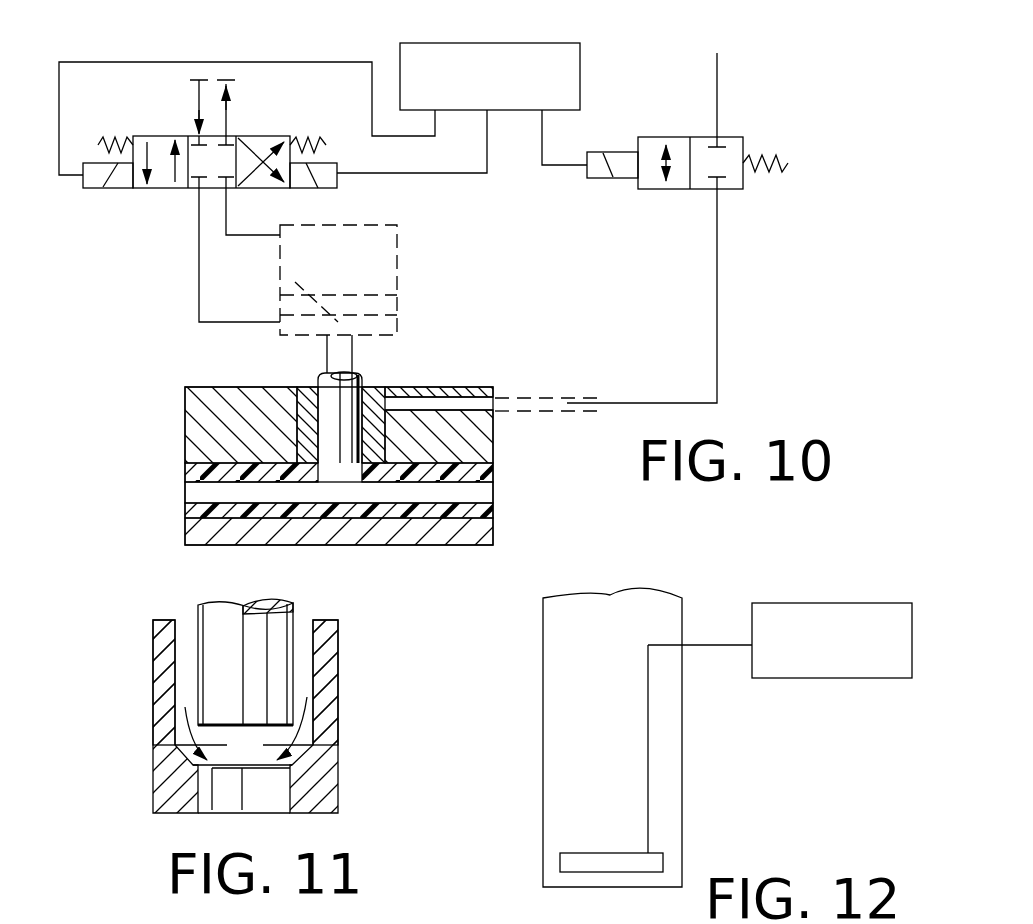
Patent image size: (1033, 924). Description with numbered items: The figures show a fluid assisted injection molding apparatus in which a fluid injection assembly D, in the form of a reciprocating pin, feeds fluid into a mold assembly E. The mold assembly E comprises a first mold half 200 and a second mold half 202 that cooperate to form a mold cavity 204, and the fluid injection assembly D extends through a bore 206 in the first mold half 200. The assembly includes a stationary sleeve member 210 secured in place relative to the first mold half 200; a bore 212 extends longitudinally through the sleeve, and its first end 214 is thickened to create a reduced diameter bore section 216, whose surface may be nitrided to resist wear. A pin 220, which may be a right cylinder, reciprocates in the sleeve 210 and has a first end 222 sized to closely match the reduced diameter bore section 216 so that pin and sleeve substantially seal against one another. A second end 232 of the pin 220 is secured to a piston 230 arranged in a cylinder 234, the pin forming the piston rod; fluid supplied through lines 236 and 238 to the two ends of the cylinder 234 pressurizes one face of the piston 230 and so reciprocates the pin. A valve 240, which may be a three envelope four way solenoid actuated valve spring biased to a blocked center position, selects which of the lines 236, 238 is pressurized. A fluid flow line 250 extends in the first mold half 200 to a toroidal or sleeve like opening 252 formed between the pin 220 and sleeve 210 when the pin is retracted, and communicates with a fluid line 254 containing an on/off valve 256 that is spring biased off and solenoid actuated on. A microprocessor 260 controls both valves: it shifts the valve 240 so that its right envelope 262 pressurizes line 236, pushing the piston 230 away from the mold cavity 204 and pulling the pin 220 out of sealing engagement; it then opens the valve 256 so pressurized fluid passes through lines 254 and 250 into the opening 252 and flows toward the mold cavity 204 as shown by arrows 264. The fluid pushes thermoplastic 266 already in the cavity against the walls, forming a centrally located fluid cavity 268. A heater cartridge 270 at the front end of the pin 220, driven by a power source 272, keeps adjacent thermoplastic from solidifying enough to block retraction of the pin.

In FIG. 10, the first mold half 200 is at (472, 450).
In FIG. 10, the second mold half 202 is at (483, 528).
In FIG. 10, the mold cavity 204 is at (393, 508).
In FIG. 10, the bore 206 is at (300, 430).
In FIG. 10, the stationary sleeve member 210 is at (390, 430).
In FIG. 11, the bore 212 is at (307, 640).
In FIG. 11, the first end 214 is at (323, 773).
In FIG. 11, the reduced diameter bore section 216 is at (207, 798).
In FIG. 10, the pin 220 is at (366, 382).
In FIG. 11, the pin 220 is at (193, 606).
In FIG. 12, the pin 220 is at (684, 747).
In FIG. 11, the first end 222 is at (210, 698).
In FIG. 10, the piston 230 is at (380, 300).
In FIG. 10, the second end 232 is at (277, 273).
In FIG. 10, the cylinder 234 is at (397, 235).
In FIG. 10, the line 236 is at (227, 212).
In FIG. 10, the line 238 is at (198, 278).
In FIG. 10, the valve 240 is at (262, 128).
In FIG. 10, the fluid flow line 250 is at (488, 390).
In FIG. 10, the toroidal opening 252 is at (313, 390).
In FIG. 11, the toroidal opening 252 is at (183, 653).
In FIG. 10, the fluid line 254 is at (719, 315).
In FIG. 10, the on/off valve 256 is at (731, 134).
In FIG. 10, the microprocessor 260 is at (580, 70).
In FIG. 10, the right envelope 262 is at (160, 177).
In FIG. 11, the arrows 264 is at (300, 717).
In FIG. 10, the thermoplastic 266 is at (185, 507).
In FIG. 10, the fluid cavity 268 is at (467, 493).
In FIG. 12, the heater cartridge 270 is at (653, 863).
In FIG. 12, the power source 272 is at (813, 603).
In FIG. 10, the fluid injection assembly D is at (370, 360).
In FIG. 10, the mold assembly E is at (183, 430).